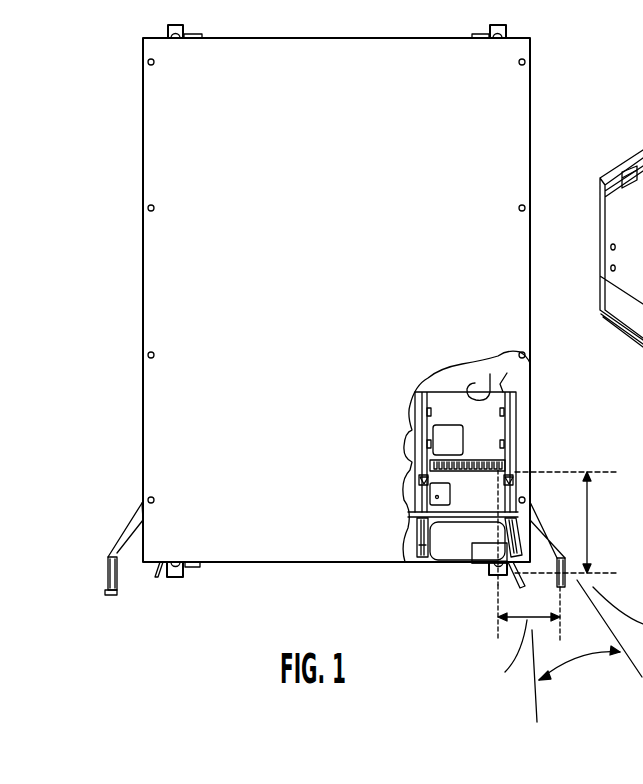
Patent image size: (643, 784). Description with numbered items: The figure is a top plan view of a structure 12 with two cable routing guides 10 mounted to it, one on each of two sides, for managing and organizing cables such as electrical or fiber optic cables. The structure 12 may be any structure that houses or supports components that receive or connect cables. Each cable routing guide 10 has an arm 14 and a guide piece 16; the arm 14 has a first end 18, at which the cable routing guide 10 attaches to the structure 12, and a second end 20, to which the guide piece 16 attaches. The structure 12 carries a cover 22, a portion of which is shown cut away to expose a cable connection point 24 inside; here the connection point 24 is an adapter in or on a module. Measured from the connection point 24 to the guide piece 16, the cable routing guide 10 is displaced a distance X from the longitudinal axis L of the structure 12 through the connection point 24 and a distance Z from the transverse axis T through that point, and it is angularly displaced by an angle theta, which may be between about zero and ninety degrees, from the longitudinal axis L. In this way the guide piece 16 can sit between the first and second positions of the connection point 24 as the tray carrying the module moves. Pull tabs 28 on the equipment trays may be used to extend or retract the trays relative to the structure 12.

The cable routing guide 10 is at (588, 573).
The structure 12 is at (531, 166).
The arm 14 is at (128, 532).
The guide piece 16 is at (112, 591).
The first end 18 is at (143, 505).
The second end 20 is at (108, 555).
The cover 22 is at (170, 190).
The cable connection point 24 is at (497, 465).
The pull tab 28 is at (150, 582).